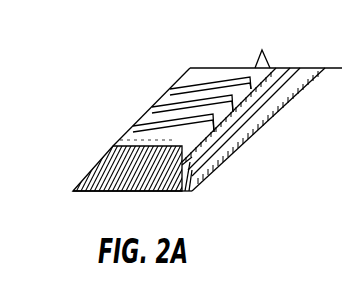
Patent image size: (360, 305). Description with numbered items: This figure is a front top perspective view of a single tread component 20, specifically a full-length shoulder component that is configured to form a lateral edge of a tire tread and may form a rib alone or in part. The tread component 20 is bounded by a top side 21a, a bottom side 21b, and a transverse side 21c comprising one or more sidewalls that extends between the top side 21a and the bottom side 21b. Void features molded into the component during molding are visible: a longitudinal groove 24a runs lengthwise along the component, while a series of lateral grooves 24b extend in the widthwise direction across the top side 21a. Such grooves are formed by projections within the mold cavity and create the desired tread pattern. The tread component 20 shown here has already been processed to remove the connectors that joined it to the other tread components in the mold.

The tread component 20 is at (98, 163).
The top side 21a is at (165, 99).
The bottom side 21b is at (97, 191).
The transverse side 21c is at (268, 107).
The longitudinal groove 24a is at (205, 150).
The lateral grooves 24b is at (205, 80).